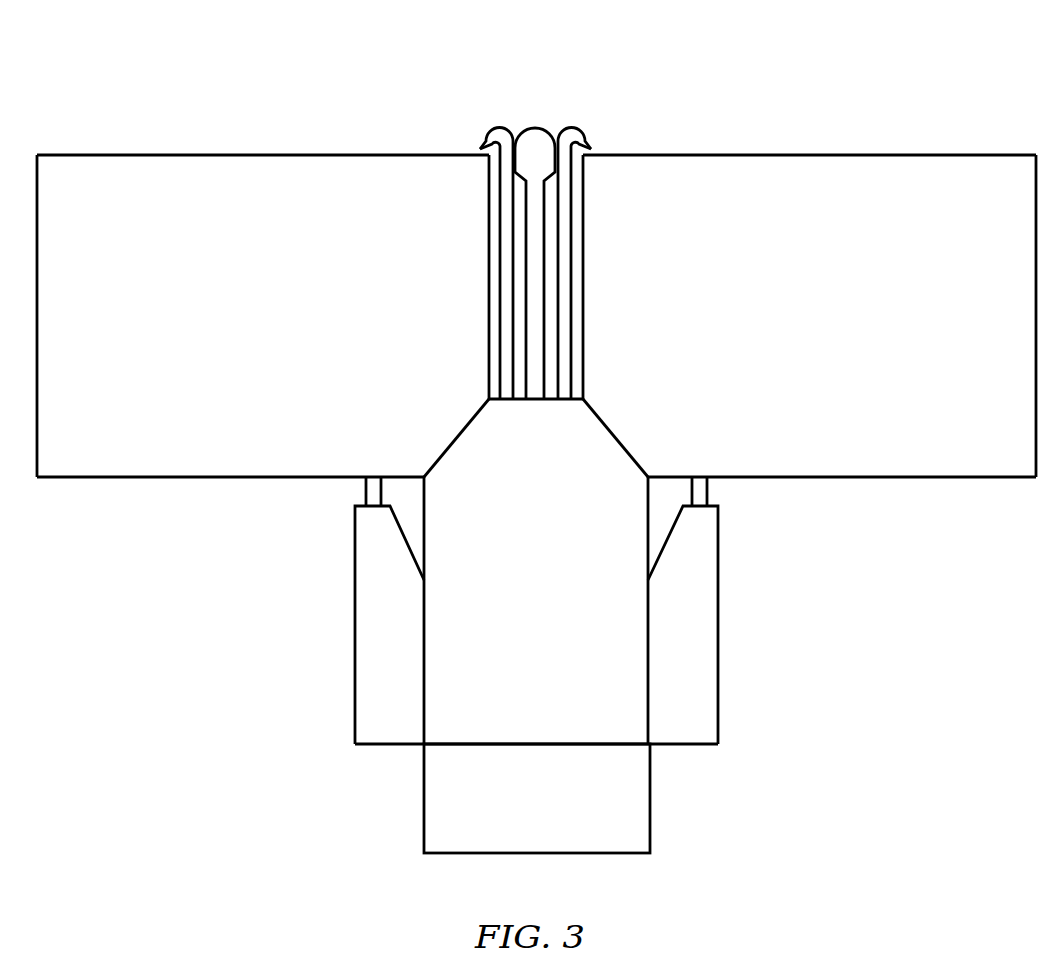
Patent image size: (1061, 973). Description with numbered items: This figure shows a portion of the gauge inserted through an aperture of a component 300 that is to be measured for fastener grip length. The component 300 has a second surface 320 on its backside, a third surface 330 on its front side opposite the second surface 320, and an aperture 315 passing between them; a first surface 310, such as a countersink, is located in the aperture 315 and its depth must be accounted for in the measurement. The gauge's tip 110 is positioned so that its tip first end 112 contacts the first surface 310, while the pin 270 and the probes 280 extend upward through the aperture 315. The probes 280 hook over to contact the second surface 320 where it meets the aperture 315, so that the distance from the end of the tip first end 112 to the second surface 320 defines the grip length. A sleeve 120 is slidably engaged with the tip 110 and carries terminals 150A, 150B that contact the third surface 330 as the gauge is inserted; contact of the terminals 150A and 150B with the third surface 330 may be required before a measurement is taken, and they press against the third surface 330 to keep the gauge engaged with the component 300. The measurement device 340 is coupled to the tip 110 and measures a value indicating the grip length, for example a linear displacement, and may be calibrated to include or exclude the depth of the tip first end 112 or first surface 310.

The component 300 is at (536, 318).
The second surface 320 is at (297, 155).
The third surface 330 is at (893, 477).
The aperture 315 is at (495, 248).
The first surface 310 is at (452, 442).
The tip 110 is at (550, 540).
The tip first end 112 is at (623, 426).
The sleeve 120 is at (355, 643).
The terminal 150A is at (708, 485).
The terminal 150B is at (363, 488).
The measurement device 340 is at (515, 842).
The pin 270 is at (545, 130).
The probes 280 is at (628, 113).